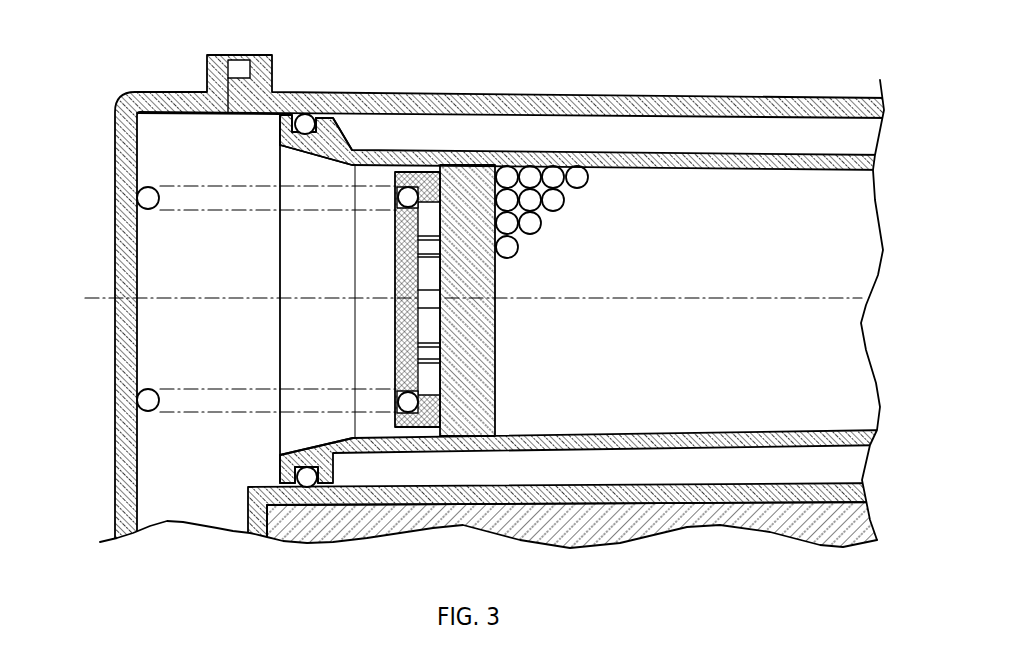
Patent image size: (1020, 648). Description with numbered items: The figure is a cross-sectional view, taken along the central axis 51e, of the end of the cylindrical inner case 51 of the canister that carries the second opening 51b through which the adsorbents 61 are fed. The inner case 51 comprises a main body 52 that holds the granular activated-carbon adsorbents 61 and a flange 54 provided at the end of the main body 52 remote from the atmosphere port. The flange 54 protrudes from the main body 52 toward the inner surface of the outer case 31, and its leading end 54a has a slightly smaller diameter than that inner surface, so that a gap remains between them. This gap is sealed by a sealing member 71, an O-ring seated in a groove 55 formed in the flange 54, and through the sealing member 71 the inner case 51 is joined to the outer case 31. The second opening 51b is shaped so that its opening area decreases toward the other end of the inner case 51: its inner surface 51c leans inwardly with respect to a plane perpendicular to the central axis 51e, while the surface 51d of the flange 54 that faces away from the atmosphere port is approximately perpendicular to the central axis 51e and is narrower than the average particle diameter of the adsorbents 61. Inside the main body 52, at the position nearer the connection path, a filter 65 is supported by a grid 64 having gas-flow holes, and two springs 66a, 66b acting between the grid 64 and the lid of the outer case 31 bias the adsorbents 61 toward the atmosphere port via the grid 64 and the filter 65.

The outer case 31 is at (502, 288).
The inner case 51 is at (640, 148).
The second opening 51b is at (313, 287).
The inner surface 51c is at (297, 155).
The surface 51d is at (280, 128).
The central axis 51e is at (187, 297).
The main body 52 is at (738, 153).
The flange 54 is at (333, 136).
The leading end 54a is at (287, 132).
The groove 55 is at (347, 128).
The adsorbents 61 is at (552, 177).
The grid 64 is at (426, 176).
The filter 65 is at (473, 197).
The spring 66a is at (220, 186).
The spring 66b is at (220, 389).
The sealing member 71 is at (304, 118).